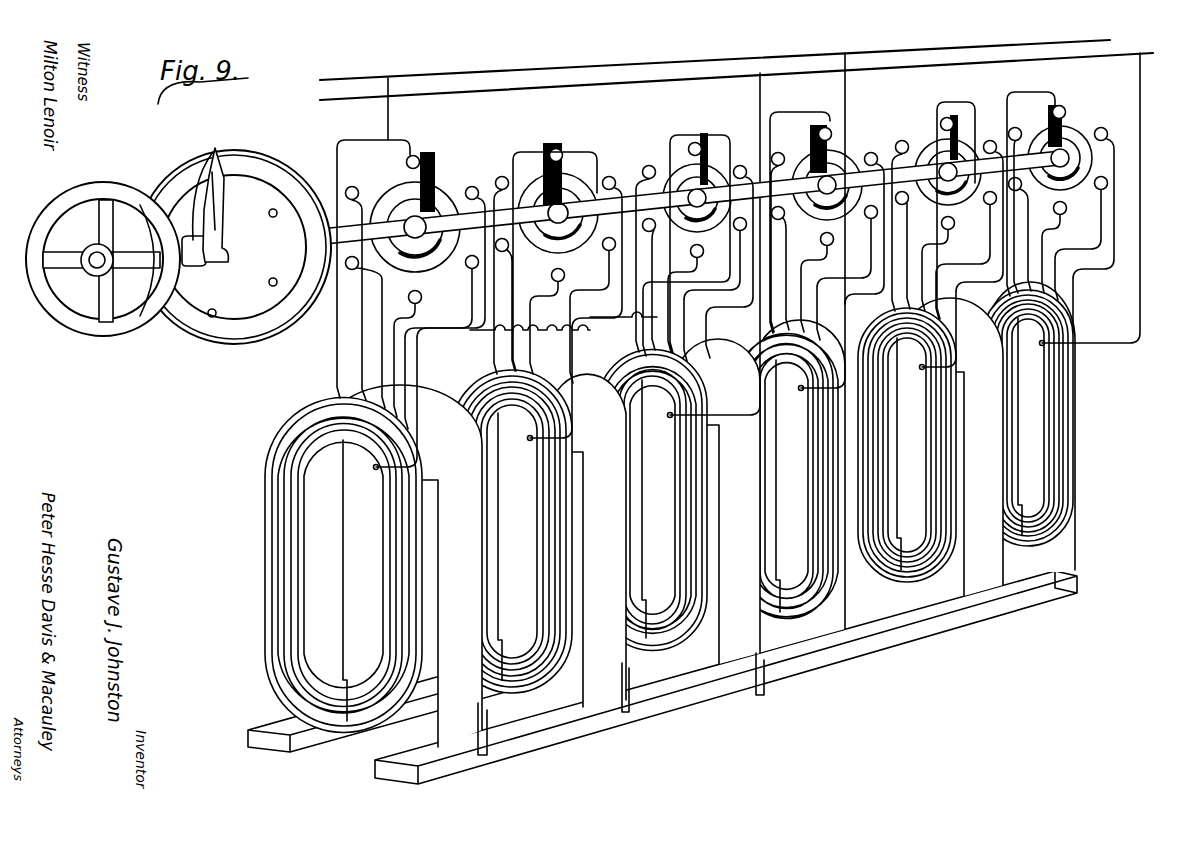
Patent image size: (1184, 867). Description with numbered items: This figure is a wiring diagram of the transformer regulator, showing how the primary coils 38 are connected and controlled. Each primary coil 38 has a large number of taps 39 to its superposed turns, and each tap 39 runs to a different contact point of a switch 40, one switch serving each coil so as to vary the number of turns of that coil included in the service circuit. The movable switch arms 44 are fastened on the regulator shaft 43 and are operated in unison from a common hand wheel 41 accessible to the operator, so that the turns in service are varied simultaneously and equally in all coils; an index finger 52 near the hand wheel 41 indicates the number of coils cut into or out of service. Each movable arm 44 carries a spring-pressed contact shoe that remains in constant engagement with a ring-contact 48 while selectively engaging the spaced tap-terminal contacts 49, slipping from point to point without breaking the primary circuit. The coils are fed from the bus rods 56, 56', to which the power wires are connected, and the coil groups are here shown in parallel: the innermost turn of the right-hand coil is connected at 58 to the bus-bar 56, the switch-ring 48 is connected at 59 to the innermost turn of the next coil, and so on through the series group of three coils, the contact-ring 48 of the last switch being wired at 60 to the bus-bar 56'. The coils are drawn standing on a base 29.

The base rail 29 is at (425, 782).
The primary coil 38 is at (277, 420).
The tap 39 is at (380, 344).
The switch 40 is at (436, 152).
The hand wheel 41 is at (57, 322).
The regulator shaft 43 is at (326, 262).
The movable switch arm 44 is at (425, 150).
The ring-contact 48 is at (448, 190).
The tap-terminal contact 49 is at (352, 186).
The index finger 52 is at (214, 158).
The bus rod 56 is at (736, 84).
The bus rod 56' is at (715, 60).
The connection of innermost turn to bus-bar 58 is at (758, 101).
The connection of switch-ring to next coil 59 is at (430, 466).
The connection of contact-ring to bus-bar 60 is at (387, 119).